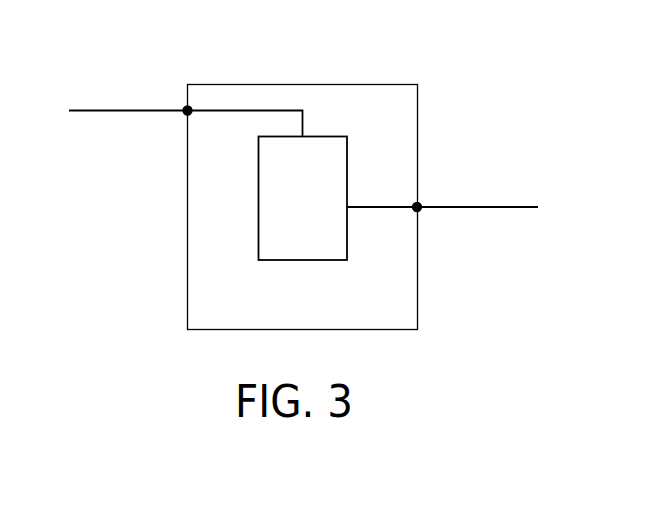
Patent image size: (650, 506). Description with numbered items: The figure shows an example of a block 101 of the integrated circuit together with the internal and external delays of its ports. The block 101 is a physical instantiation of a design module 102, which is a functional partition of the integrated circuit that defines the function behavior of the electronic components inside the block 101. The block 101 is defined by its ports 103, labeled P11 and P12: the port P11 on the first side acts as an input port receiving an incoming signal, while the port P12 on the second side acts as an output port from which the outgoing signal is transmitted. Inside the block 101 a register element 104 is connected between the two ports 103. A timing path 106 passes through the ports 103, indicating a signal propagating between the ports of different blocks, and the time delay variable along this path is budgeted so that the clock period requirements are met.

The block 101 is at (450, 55).
The design module 102 is at (243, 316).
The port 103 is at (187, 106).
The register (REG 1) 104 is at (258, 175).
The timing path 106 is at (150, 112).
The port P11 is at (185, 118).
The port P12 is at (421, 214).